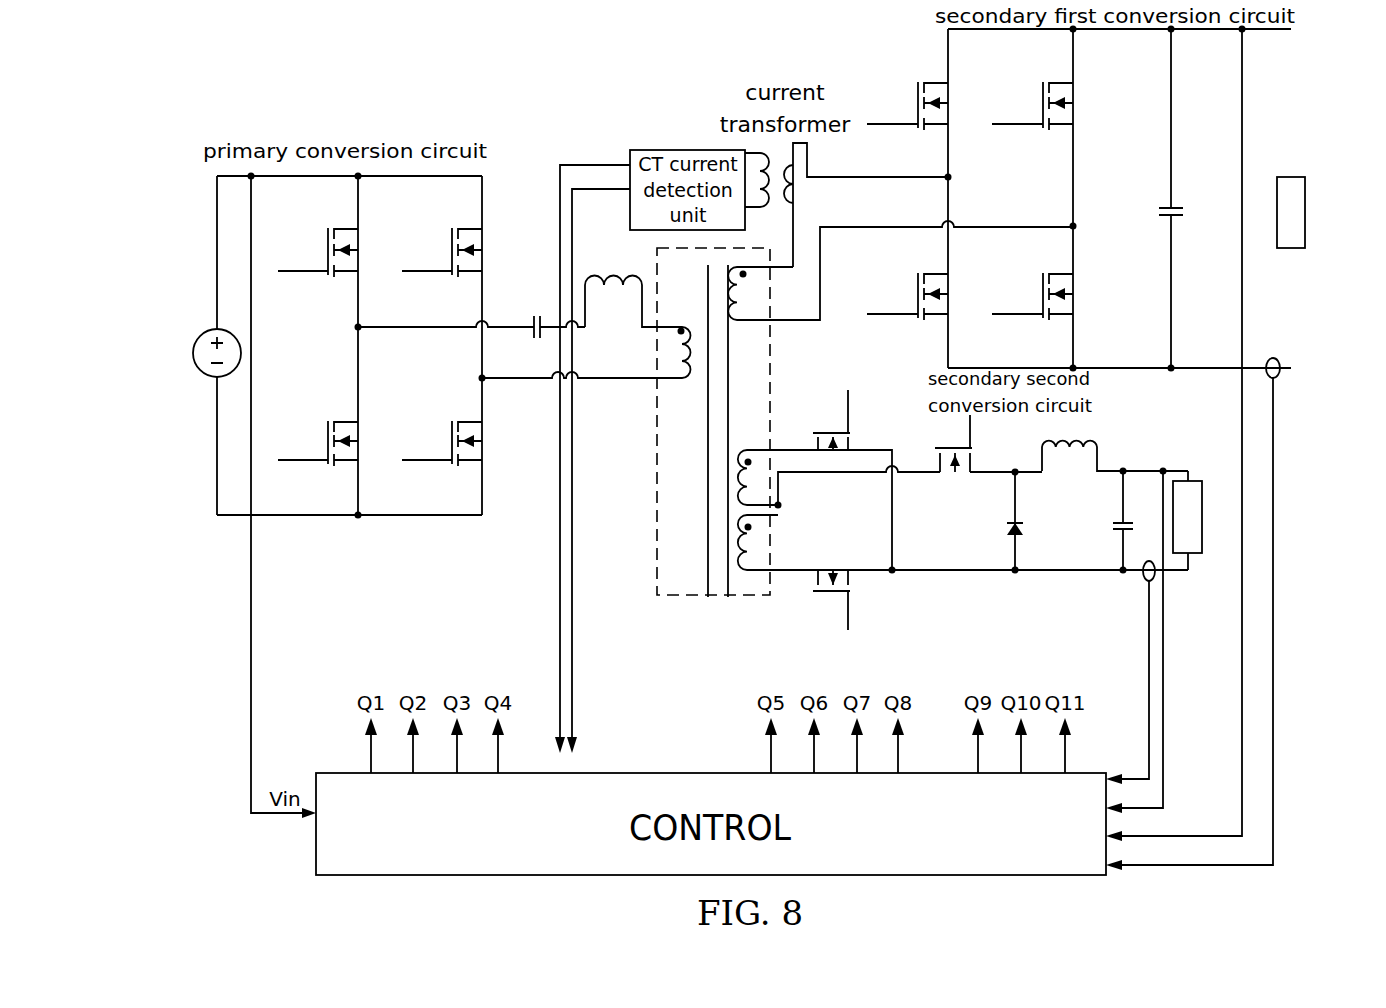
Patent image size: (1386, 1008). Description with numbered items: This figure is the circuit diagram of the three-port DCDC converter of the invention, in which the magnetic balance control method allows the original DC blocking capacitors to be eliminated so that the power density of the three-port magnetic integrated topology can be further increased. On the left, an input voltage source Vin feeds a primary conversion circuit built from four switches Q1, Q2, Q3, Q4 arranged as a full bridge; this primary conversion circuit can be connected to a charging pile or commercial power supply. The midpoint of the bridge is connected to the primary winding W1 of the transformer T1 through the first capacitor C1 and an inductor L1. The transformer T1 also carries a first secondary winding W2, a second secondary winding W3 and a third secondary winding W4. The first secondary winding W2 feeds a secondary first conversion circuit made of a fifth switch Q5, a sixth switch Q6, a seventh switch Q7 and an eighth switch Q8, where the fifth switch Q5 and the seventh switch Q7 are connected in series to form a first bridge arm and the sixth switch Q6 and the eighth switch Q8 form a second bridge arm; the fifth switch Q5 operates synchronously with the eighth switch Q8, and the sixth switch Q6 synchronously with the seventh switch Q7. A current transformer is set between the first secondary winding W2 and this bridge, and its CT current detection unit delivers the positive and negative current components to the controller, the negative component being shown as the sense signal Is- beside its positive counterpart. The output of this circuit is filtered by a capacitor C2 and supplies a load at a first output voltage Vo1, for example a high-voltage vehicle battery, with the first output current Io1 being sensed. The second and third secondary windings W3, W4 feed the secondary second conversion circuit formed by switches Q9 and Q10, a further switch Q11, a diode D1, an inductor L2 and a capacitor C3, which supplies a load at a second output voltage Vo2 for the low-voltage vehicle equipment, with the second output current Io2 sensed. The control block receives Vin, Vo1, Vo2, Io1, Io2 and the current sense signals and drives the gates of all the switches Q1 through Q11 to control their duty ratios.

The switch Q1 is at (318, 234).
The switch Q2 is at (442, 234).
The switch Q3 is at (318, 425).
The switch Q4 is at (442, 425).
The fifth switch Q5 is at (907, 90).
The sixth switch Q6 is at (1032, 90).
The seventh switch Q7 is at (907, 280).
The eighth switch Q8 is at (1032, 280).
The switch Q9 is at (847, 420).
The switch Q10 is at (853, 600).
The switch Q11 is at (984, 443).
The first capacitor C1 is at (537, 312).
The capacitor C2 is at (1189, 198).
The capacitor C3 is at (1138, 520).
The inductor L1 is at (633, 292).
The inductor L2 is at (1115, 445).
The transformer T1 is at (713, 422).
The primary winding W1 is at (671, 352).
The first secondary winding W2 is at (900, 270).
The second secondary winding W3 is at (839, 510).
The third secondary winding W4 is at (963, 542).
The diode D1 is at (1032, 521).
The input voltage Vin is at (189, 353).
The first output voltage Vo1 is at (1236, 435).
The second output voltage Vo2 is at (1179, 641).
The first output current Io1 is at (1193, 614).
The second output current Io2 is at (1130, 672).
The negative current sense signal Is- is at (598, 471).